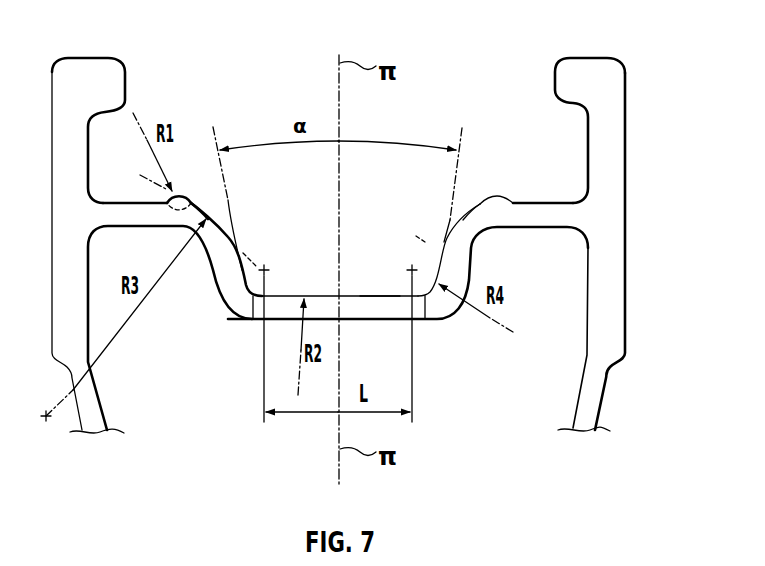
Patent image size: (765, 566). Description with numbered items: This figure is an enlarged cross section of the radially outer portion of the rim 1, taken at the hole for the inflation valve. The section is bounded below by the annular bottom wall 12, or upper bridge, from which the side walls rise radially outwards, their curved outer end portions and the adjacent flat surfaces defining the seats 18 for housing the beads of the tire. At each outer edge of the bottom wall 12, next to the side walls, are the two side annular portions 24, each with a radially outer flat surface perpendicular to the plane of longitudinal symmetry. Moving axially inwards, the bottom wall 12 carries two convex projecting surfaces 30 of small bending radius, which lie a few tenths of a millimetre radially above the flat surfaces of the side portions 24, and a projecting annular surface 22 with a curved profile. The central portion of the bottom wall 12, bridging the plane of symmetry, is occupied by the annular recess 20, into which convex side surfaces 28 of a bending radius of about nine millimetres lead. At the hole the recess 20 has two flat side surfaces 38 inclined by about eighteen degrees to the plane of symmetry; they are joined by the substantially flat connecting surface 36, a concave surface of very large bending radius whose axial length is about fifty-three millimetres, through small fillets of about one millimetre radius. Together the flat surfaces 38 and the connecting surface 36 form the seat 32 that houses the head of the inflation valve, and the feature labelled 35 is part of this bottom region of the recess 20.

The rim 1 is at (135, 43).
The bottom wall 12 is at (220, 305).
The seats 18 is at (147, 93).
The annular recess 20 is at (399, 158).
The projecting annular surface 22 is at (229, 106).
The side annular portions 24 is at (117, 203).
The convex side surfaces 28 is at (200, 208).
The convex projecting surfaces 30 is at (192, 201).
The seat 32 is at (313, 236).
The well bottom portion 35 is at (372, 294).
The connecting surface 36 is at (258, 323).
The flat side surfaces 38 is at (240, 250).